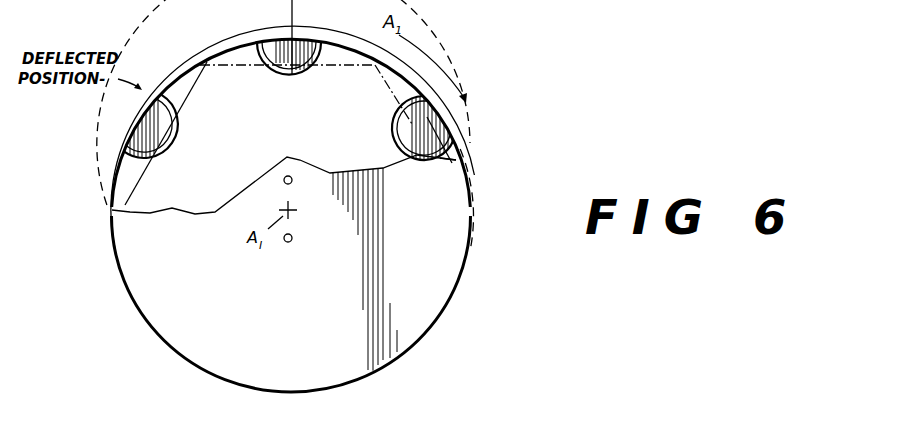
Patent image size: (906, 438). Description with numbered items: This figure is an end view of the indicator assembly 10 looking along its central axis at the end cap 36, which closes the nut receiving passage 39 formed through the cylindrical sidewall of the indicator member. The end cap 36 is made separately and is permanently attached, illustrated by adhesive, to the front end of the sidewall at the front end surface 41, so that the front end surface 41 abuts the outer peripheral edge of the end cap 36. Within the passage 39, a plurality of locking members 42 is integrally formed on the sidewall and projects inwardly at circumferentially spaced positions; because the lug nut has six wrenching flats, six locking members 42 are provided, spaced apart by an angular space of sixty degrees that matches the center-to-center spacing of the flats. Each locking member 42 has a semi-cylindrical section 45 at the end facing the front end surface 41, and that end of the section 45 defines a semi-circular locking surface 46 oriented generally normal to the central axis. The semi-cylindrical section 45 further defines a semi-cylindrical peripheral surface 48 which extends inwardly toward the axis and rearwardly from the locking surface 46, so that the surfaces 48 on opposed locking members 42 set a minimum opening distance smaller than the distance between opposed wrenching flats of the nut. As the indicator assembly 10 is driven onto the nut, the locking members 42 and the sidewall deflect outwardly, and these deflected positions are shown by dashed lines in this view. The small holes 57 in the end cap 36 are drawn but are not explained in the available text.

The housing 10 is at (138, 317).
The cylindrical shell 36 is at (205, 347).
The inner member 39 is at (261, 147).
The shell wall portion 41 is at (447, 166).
The pads 42 is at (269, 74).
The pad inner surface 45 is at (300, 72).
The pad contact area 46 is at (313, 0).
The pad boundary line 48 is at (258, 60).
The holes 57 is at (292, 184).